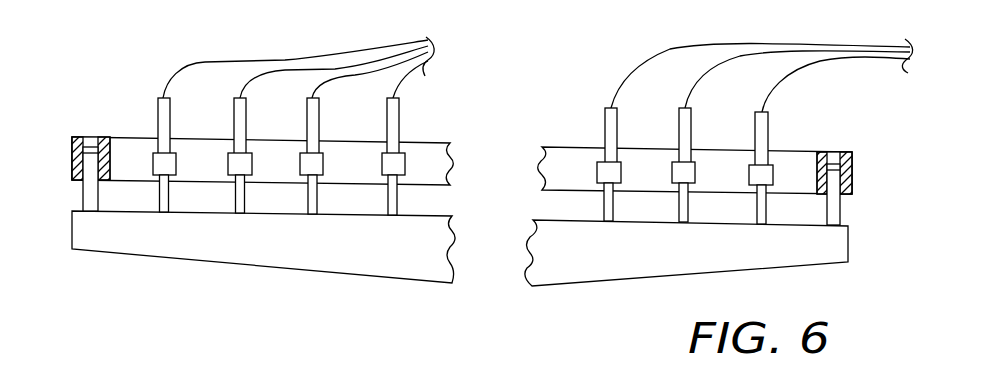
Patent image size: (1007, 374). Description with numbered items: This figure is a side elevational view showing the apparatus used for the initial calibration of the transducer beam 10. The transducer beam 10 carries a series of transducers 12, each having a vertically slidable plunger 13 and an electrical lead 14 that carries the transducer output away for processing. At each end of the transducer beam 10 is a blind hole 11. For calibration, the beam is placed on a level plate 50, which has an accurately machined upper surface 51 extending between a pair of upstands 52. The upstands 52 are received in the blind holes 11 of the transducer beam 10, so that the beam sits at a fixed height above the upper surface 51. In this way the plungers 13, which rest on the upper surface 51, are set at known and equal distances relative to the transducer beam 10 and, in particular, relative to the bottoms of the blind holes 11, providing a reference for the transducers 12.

The transducer beam 10 is at (788, 148).
The blind hole 11 is at (848, 183).
The transducer 12 is at (606, 125).
The plunger 13 is at (470, 180).
The electrical lead 14 is at (636, 62).
The level plate 50 is at (587, 257).
The upper surface 51 is at (338, 214).
The upstand 52 is at (88, 200).